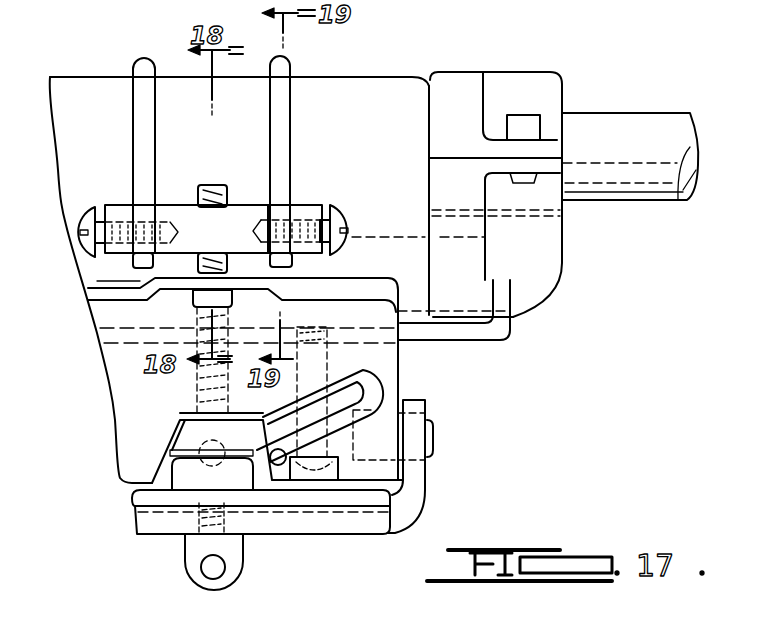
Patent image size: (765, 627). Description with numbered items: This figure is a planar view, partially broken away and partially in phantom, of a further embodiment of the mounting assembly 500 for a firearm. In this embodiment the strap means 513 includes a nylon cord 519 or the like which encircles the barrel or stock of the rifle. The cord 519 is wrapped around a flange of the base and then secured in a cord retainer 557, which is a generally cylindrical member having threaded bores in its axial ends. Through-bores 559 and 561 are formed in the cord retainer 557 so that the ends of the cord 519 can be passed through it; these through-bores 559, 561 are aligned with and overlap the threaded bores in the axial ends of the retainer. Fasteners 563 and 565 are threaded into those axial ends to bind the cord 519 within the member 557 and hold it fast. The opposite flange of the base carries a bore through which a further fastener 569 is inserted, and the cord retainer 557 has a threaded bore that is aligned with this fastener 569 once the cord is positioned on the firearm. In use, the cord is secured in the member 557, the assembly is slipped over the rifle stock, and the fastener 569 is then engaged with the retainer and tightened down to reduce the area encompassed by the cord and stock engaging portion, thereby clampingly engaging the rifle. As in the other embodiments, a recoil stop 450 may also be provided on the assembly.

The clamp mounting assembly 500 is at (95, 54).
The strap means 513 is at (143, 58).
The nylon cord 519 is at (290, 153).
The cord retainer 557 is at (313, 207).
The through-bore 559 is at (288, 206).
The through-bore 561 is at (146, 200).
The fastener 563 is at (350, 212).
The fastener 565 is at (82, 221).
The fastener 569 is at (193, 295).
The recoil stop 450 is at (510, 333).